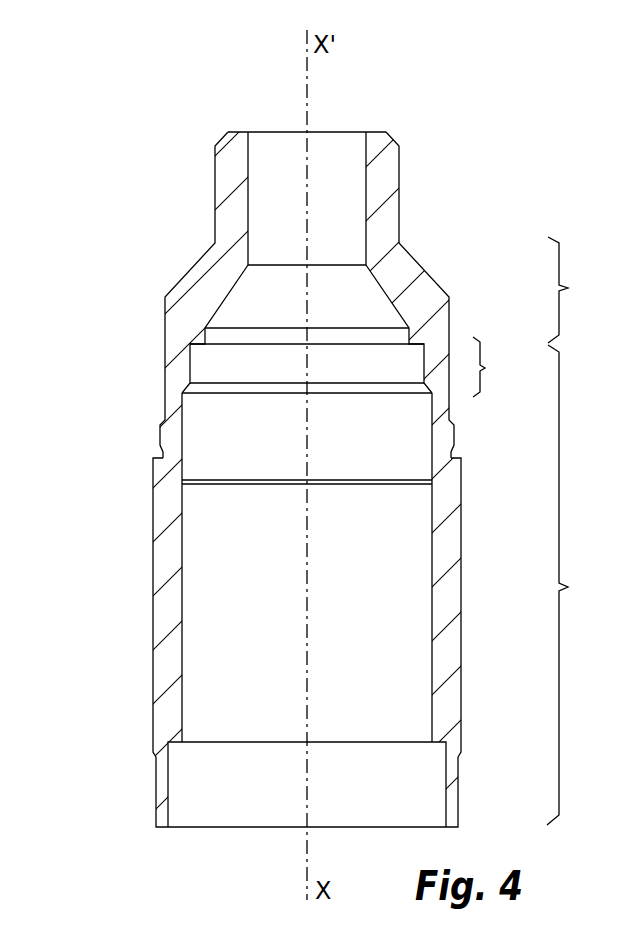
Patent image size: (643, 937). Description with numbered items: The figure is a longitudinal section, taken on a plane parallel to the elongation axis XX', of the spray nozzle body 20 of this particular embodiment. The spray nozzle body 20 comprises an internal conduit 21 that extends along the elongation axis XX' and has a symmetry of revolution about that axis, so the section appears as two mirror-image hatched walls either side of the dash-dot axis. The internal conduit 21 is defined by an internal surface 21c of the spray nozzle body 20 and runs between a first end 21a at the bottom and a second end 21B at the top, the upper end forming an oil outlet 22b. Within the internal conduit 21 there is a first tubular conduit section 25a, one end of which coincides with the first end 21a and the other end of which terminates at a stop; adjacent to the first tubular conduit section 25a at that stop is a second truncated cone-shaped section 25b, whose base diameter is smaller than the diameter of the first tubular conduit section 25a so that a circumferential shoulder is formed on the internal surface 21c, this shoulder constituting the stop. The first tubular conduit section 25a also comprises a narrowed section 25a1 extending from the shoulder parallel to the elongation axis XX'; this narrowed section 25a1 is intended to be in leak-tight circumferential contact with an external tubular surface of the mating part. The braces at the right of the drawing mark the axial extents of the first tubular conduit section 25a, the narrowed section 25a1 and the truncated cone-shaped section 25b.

The spray nozzle body 20 is at (148, 236).
The second end 21B is at (248, 179).
The oil outlet 22b is at (328, 177).
The internal conduit 21 is at (215, 613).
The internal surface 21c is at (195, 685).
The first end 21a is at (192, 808).
The second truncated cone-shaped section 25b is at (585, 290).
The first tubular conduit section 25a is at (584, 585).
The narrowed section 25a1 is at (509, 367).